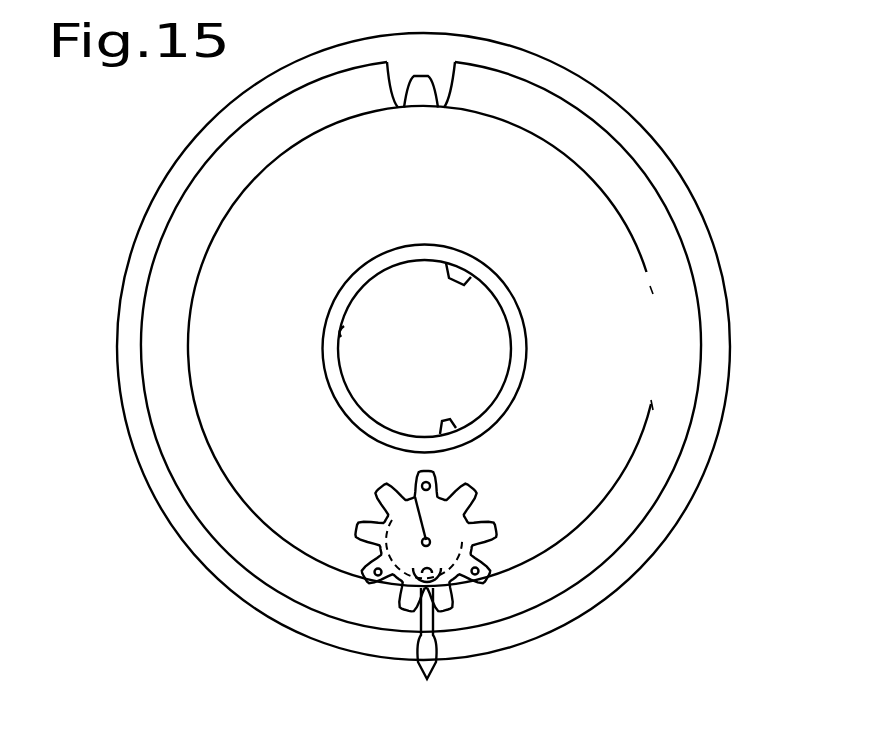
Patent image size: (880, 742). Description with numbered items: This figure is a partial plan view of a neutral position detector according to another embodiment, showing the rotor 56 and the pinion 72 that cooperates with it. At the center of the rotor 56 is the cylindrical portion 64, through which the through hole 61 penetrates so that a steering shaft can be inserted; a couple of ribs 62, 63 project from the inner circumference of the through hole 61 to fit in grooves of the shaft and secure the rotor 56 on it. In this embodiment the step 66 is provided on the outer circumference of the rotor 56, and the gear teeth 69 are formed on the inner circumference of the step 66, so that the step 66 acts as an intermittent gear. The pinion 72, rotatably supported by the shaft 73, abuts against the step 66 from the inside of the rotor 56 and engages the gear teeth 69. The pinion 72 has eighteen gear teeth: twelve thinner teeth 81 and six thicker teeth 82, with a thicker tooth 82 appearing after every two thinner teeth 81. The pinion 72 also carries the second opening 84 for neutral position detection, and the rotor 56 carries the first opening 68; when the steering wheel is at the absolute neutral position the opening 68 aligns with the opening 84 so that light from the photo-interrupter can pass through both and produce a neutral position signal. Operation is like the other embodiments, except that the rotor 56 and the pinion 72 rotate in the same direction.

The rotor 56 is at (703, 462).
The step 66 is at (530, 118).
The gear teeth 69 is at (445, 78).
The cylindrical portion 64 is at (519, 327).
The through hole 61 is at (338, 338).
The rib 63 is at (452, 279).
The rib 62 is at (443, 419).
The pinion 72 is at (472, 488).
The shaft 73 is at (415, 497).
The opening 84 is at (443, 553).
The opening 68 is at (385, 517).
The thicker teeth 82 is at (358, 565).
The thinner teeth 81 is at (431, 651).